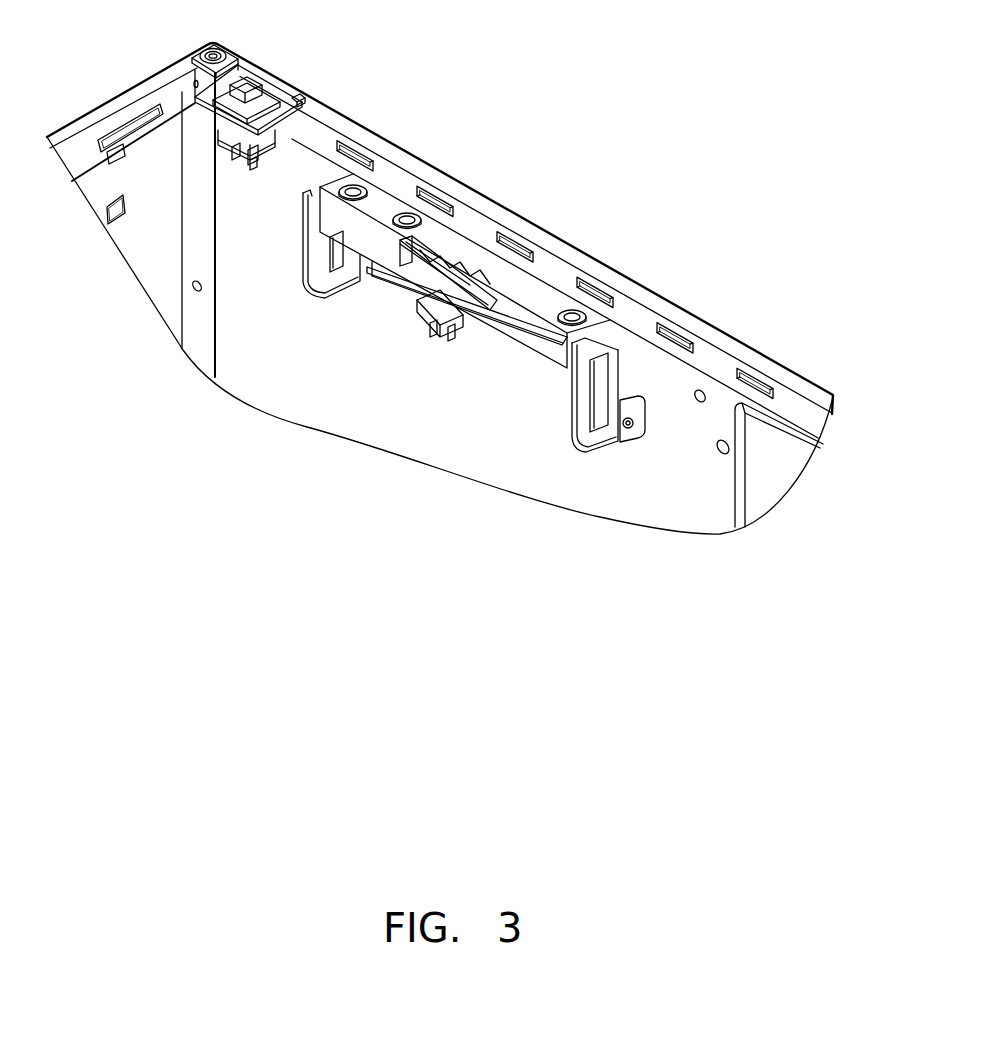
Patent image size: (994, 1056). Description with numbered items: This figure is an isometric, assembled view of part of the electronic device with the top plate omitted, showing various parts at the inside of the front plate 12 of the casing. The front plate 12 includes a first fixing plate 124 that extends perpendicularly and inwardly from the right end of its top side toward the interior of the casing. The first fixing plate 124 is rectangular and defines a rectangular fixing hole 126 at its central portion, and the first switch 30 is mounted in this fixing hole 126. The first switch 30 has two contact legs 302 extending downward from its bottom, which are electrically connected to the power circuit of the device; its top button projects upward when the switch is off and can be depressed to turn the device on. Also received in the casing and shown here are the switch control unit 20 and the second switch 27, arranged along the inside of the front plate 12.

The front plate 12 is at (687, 488).
The first fixing plate 124 is at (283, 124).
The fixing hole 126 is at (281, 123).
The switch control unit 20 is at (458, 250).
The second switch 27 is at (428, 313).
The first switch 30 is at (247, 83).
The contact legs 302 is at (253, 163).